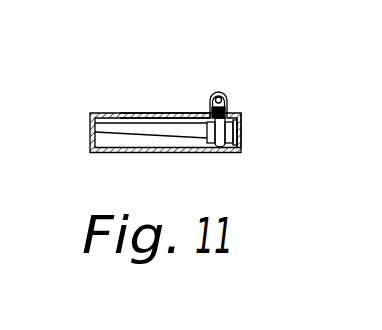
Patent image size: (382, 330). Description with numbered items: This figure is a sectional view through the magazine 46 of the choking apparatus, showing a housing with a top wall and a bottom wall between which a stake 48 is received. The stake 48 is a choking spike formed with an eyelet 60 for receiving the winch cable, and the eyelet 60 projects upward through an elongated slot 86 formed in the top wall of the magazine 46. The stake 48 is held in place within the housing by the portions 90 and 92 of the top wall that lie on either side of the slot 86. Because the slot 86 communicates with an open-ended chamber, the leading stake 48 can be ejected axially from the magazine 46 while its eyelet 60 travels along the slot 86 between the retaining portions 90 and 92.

The magazine 46 is at (104, 112).
The stake 48 is at (165, 133).
The portion of the top wall 92 is at (160, 113).
The elongated slot 86 is at (209, 110).
The eyelet 60 is at (225, 93).
The portion of the top wall 90 is at (242, 112).